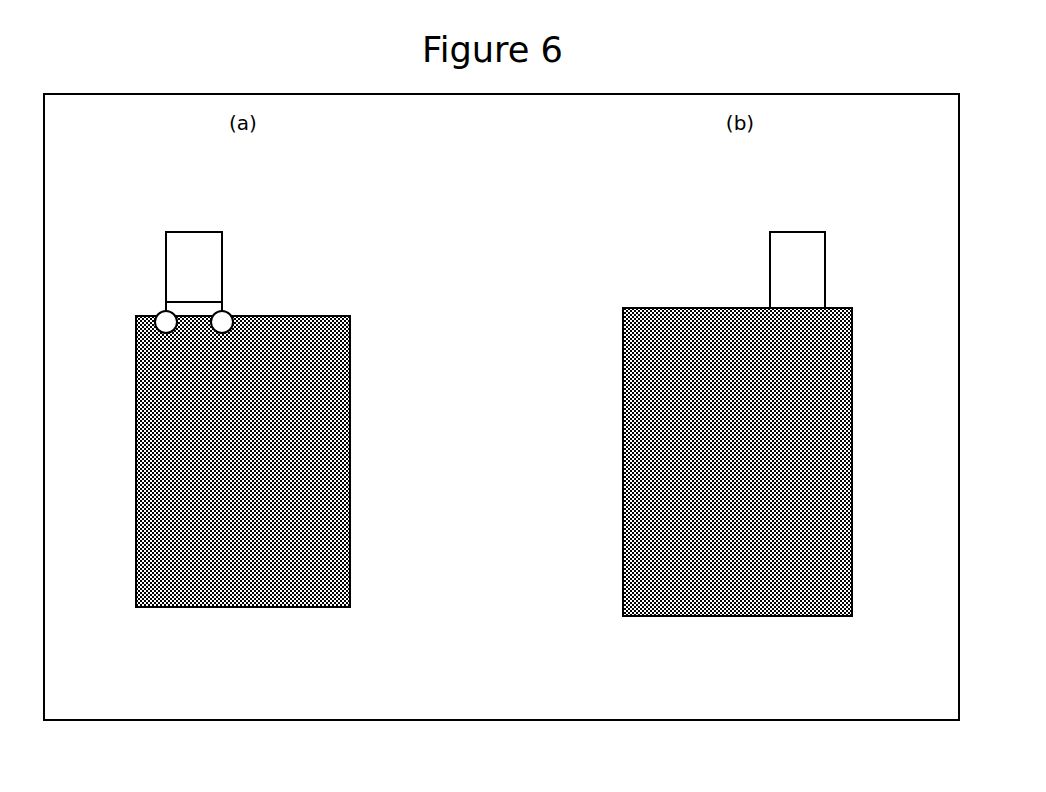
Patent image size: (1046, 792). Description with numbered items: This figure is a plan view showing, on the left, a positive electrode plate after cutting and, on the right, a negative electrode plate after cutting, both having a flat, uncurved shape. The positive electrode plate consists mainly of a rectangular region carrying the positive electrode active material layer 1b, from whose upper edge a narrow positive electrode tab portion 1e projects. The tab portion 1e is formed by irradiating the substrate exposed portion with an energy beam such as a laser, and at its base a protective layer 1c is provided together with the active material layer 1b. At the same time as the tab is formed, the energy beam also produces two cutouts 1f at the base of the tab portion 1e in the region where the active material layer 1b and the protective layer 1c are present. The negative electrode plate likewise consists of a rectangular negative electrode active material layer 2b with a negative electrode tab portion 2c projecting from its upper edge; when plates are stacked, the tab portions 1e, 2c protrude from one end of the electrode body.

The positive electrode active material layer 1b is at (233, 552).
The positive electrode tab portion 1e is at (178, 250).
The protective layer 1c is at (190, 307).
The cutouts 1f is at (165, 316).
The negative electrode active material layer 2b is at (723, 552).
The negative electrode tab portion 2c is at (797, 280).